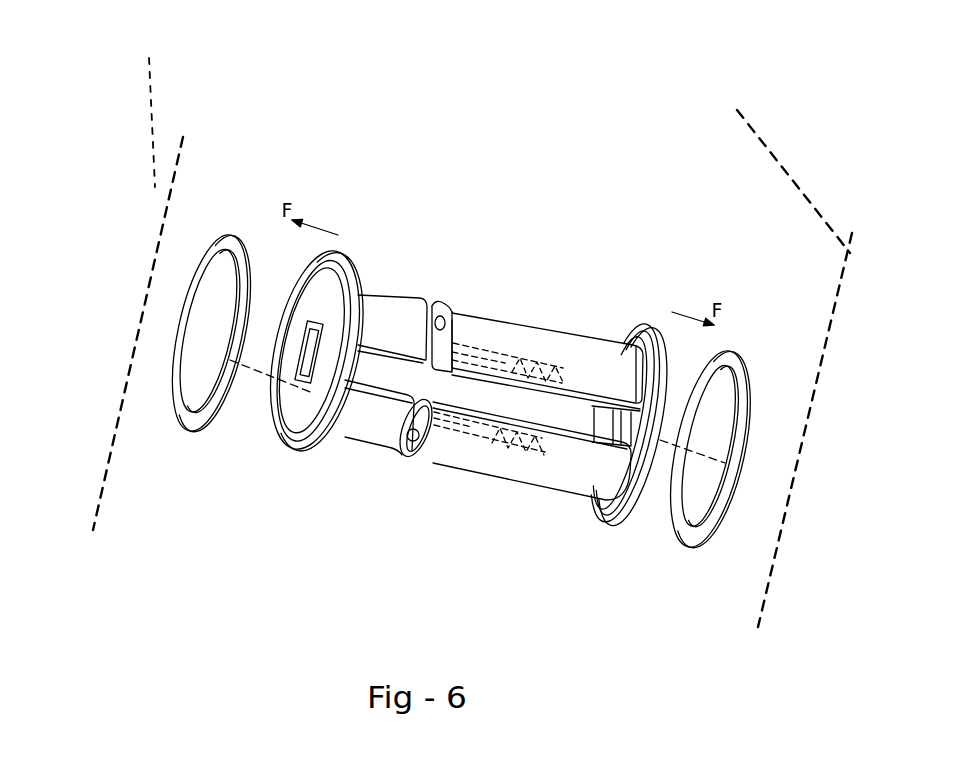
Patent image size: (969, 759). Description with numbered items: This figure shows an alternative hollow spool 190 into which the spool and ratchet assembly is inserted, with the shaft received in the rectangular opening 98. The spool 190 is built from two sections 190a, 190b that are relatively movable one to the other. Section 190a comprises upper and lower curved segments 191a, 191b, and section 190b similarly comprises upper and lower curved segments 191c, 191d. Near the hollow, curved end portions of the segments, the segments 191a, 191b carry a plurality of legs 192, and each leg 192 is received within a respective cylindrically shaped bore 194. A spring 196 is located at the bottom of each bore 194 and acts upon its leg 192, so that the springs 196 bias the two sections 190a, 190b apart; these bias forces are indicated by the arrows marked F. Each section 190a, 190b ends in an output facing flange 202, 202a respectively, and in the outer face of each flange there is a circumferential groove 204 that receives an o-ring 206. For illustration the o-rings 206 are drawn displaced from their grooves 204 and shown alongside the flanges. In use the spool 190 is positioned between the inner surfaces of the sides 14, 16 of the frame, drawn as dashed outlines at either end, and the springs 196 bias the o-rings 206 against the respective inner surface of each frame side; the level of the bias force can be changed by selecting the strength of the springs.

The frame side 14 is at (138, 278).
The frame side 16 is at (779, 356).
The rectangular opening 98 is at (300, 370).
The spool 190 is at (491, 279).
The first spool section 190a is at (397, 322).
The second spool section 190b is at (578, 334).
The upper curved segment 191a is at (365, 292).
The lower curved segment 191b is at (362, 435).
The upper curved segment 191c is at (606, 347).
The lower curved segment 191d is at (583, 483).
The leg 192 is at (447, 303).
The cylindrically shaped bore 194 is at (466, 345).
The spring 196 is at (538, 358).
The output facing flange 202 is at (308, 445).
The output facing flange 202a is at (632, 520).
The circumferential groove 204 is at (313, 258).
The o-ring 206 is at (224, 242).